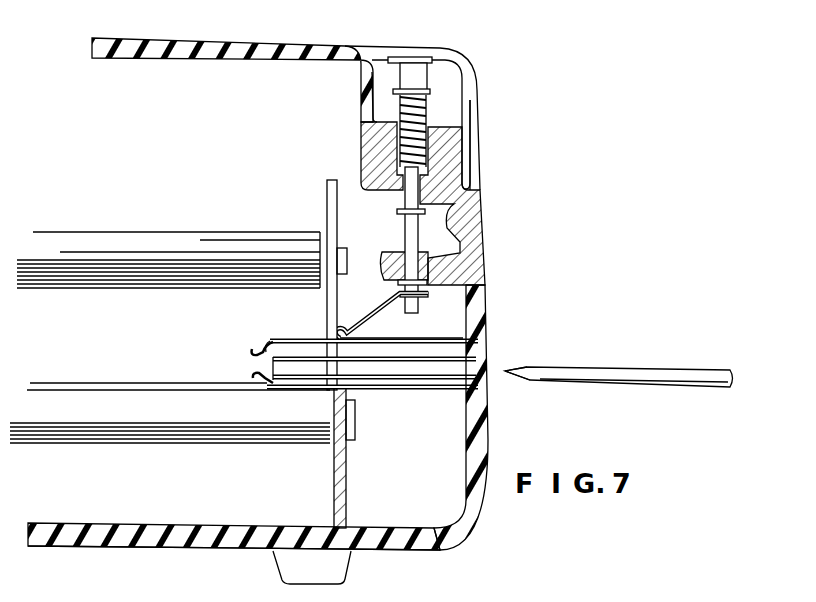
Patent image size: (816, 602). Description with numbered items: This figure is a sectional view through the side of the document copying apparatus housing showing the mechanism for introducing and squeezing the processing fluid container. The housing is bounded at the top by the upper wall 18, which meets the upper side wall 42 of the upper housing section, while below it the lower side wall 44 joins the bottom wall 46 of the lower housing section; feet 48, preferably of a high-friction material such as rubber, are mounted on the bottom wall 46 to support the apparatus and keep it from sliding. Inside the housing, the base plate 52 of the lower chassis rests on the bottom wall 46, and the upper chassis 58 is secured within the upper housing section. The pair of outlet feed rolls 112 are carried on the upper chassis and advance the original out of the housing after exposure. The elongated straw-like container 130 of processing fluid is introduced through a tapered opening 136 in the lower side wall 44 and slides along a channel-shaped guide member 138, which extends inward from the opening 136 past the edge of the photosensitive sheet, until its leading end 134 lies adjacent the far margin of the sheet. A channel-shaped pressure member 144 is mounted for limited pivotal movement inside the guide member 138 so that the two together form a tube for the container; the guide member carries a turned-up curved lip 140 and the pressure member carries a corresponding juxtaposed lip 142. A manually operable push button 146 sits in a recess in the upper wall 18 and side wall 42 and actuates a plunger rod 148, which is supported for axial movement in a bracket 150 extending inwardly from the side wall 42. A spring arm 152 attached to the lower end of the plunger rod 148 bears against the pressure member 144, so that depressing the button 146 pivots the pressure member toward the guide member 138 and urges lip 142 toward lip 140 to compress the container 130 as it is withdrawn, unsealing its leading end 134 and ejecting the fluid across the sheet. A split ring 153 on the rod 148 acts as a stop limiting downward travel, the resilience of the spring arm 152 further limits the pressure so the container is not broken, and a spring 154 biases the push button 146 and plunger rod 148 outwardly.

The upper wall 18 is at (289, 22).
The upper side wall 42 is at (482, 203).
The lower side wall 44 is at (478, 462).
The bottom wall 46 is at (160, 540).
The feet 48 is at (333, 570).
The base plate 52 is at (132, 528).
The upper chassis 58 is at (325, 203).
The outlet feed rolls 112 is at (180, 243).
The container 130 is at (606, 356).
The leading end 134 is at (512, 374).
The tapered opening 136 is at (480, 363).
The guide member 138 is at (402, 396).
The curved lip 140 is at (252, 379).
The lip 142 is at (262, 345).
The pressure member 144 is at (430, 334).
The push button 146 is at (425, 68).
The plunger rod 148 is at (409, 188).
The bracket 150 is at (433, 260).
The spring arm 152 is at (368, 322).
The split ring 153 is at (397, 212).
The spring 154 is at (427, 112).